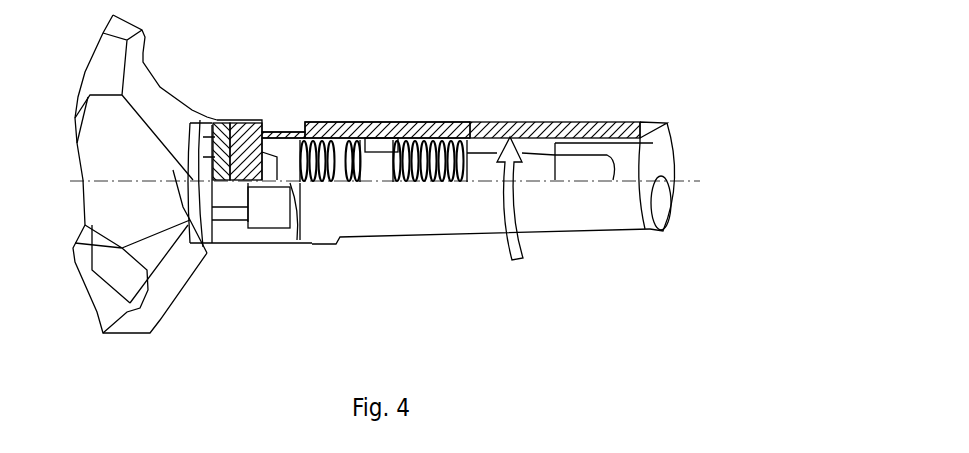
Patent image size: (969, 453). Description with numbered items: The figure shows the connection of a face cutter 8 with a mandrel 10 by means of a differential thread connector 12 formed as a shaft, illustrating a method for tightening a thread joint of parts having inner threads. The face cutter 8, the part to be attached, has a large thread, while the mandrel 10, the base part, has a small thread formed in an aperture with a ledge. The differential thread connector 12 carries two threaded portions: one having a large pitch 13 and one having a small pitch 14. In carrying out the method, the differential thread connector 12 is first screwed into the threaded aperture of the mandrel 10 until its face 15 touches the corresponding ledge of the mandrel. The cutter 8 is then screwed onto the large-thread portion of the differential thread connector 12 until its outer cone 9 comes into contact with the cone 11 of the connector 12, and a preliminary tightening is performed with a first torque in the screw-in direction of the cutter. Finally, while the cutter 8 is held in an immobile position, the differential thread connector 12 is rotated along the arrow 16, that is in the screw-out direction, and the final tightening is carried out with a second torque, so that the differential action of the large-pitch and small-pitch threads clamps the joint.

The face cutter 8 is at (192, 197).
The outer cone 9 is at (288, 138).
The mandrel 10 is at (367, 213).
The cone 11 is at (340, 148).
The differential thread connector 12 is at (477, 168).
The threaded portion having a large pitch 13 is at (323, 140).
The threaded portion having a small pitch 14 is at (425, 140).
The face 15 is at (472, 141).
The arrow 16 is at (511, 195).